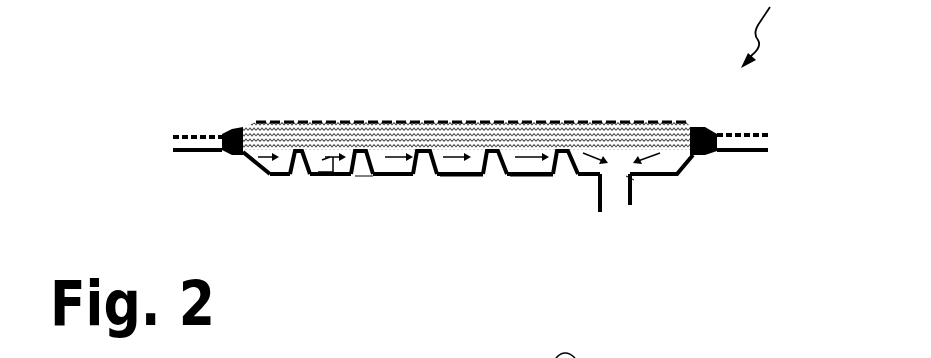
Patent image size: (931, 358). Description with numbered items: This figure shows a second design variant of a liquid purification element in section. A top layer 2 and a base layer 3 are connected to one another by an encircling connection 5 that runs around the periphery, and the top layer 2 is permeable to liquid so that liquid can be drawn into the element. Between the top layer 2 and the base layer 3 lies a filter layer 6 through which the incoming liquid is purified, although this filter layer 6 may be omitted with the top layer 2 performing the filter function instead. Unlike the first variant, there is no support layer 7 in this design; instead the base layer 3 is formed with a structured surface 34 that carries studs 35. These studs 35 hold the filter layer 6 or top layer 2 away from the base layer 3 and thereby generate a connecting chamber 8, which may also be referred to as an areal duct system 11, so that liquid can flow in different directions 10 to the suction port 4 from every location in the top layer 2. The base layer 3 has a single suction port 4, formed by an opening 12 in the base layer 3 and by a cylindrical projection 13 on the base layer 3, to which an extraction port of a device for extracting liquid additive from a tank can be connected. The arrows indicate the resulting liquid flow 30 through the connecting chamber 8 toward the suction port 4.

The top layer 2 is at (262, 112).
The base layer 3 is at (245, 178).
The suction port 4 is at (618, 182).
The encircling connection 5 is at (706, 158).
The filter layer 6 is at (460, 120).
The support layer 7 is at (555, 178).
The connecting chamber 8 is at (318, 174).
The directions 10 is at (657, 153).
The areal duct system 11 is at (489, 177).
The opening 12 is at (627, 181).
The cylindrical projection 13 is at (629, 182).
The liquid flow 30 is at (530, 357).
The structured surface 34 is at (373, 177).
The studs 35 is at (293, 120).